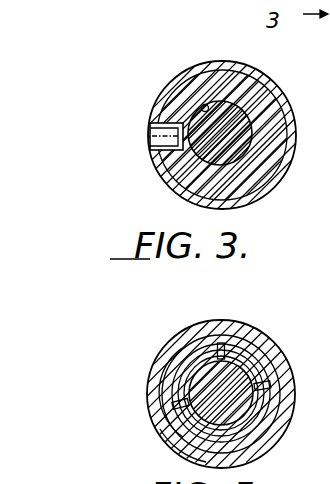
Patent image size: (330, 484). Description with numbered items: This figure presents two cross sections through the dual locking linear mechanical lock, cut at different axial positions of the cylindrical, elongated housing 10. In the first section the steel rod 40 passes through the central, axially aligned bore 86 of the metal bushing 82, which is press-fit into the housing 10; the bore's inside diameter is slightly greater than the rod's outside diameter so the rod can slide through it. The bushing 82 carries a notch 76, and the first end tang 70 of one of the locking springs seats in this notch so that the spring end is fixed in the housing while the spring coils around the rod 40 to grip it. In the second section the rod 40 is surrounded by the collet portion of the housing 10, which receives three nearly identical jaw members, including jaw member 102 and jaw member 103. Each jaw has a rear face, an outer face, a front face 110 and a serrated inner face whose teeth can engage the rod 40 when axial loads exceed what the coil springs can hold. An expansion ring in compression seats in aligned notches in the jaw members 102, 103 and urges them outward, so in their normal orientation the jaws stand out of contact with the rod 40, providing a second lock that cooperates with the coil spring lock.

In FIG. 3, the housing 10 is at (284, 173).
In FIG. 5, the housing 10 is at (250, 327).
In FIG. 3, the rod 40 is at (246, 133).
In FIG. 5, the rod 40 is at (241, 390).
In FIG. 3, the first end tang 70 is at (149, 138).
In FIG. 3, the notch 76 is at (174, 162).
In FIG. 3, the bushing 82 is at (263, 98).
In FIG. 3, the bore 86 is at (203, 106).
In FIG. 5, the jaw member 102 is at (261, 357).
In FIG. 5, the jaw member 103 is at (168, 360).
In FIG. 5, the front face 110 is at (190, 348).